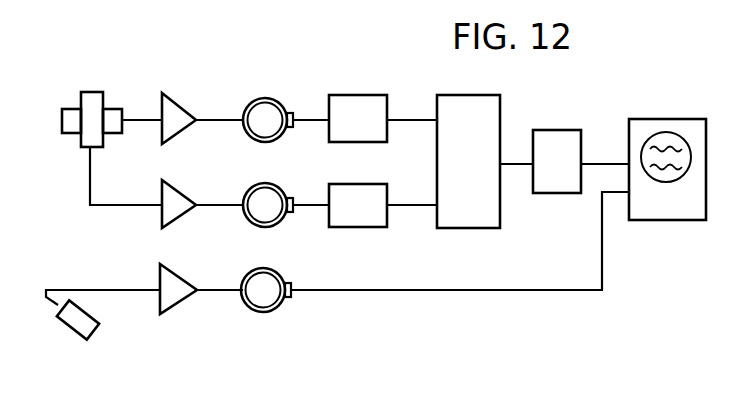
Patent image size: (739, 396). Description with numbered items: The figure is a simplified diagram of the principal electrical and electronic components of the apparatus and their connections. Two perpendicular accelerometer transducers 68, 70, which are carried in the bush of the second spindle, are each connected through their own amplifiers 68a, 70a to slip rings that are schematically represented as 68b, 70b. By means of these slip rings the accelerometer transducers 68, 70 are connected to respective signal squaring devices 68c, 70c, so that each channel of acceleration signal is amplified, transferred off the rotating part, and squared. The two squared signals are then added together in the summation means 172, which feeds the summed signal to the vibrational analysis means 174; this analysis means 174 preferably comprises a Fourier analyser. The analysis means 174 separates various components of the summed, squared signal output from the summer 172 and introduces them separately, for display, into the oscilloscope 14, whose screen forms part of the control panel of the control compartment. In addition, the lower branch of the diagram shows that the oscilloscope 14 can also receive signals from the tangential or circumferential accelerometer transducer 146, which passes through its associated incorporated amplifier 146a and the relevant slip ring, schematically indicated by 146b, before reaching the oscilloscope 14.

The oscilloscope 14 is at (667, 140).
The accelerometer transducer 68 is at (84, 100).
The accelerometer transducer 70 is at (72, 120).
The amplifier 68a is at (170, 200).
The slip ring 68b is at (262, 196).
The signal squaring device 68c is at (355, 193).
The amplifier 70a is at (178, 112).
The slip ring 70b is at (262, 112).
The signal squaring device 70c is at (355, 108).
The summation means 172 is at (466, 108).
The vibrational analysis means 174 is at (560, 138).
The tangential accelerometer transducer 146 is at (85, 322).
The amplifier 146a is at (170, 282).
The slip ring 146b is at (270, 296).